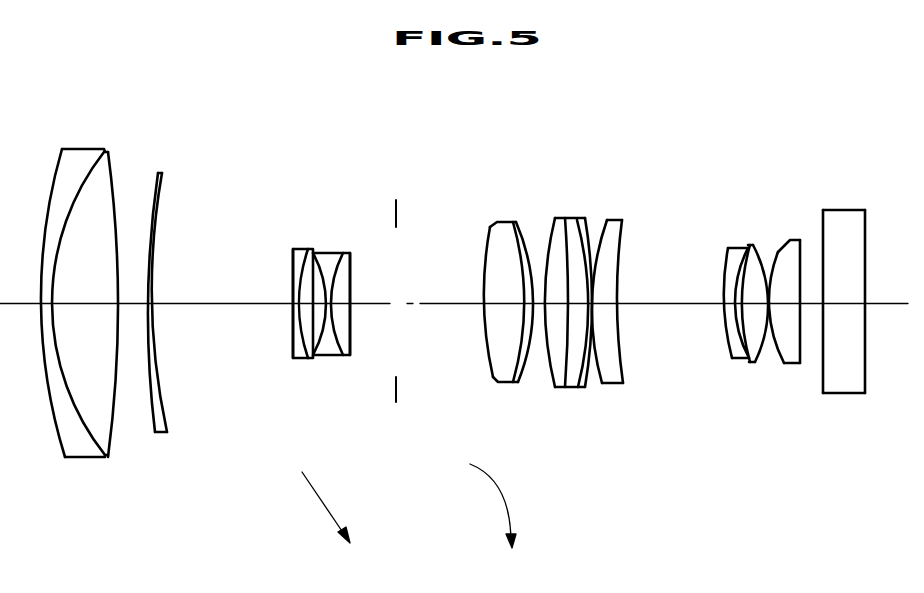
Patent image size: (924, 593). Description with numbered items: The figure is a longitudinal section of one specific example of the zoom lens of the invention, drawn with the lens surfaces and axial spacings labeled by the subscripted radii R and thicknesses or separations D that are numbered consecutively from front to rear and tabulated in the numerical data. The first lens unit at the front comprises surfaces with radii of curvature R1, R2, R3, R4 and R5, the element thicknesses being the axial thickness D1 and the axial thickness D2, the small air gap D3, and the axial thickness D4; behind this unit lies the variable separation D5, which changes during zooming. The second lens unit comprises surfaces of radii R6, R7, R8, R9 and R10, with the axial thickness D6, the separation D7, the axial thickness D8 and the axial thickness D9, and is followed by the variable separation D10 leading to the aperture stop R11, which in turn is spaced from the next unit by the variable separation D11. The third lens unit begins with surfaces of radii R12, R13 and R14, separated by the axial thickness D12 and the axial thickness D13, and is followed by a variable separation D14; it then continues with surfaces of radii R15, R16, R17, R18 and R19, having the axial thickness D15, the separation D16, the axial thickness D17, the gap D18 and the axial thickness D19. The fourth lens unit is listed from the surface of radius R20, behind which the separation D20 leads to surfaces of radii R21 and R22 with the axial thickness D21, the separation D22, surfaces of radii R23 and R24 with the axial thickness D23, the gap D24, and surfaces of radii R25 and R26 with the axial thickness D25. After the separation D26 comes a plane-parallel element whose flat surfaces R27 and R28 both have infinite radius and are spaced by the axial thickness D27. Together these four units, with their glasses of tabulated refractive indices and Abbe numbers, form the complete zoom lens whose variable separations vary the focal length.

The radius of curvature of first surface R1 is at (53, 182).
The radius of curvature of second surface R2 is at (86, 182).
The radius of curvature of third surface R3 is at (113, 183).
The radius of curvature of fourth surface R4 is at (135, 198).
The radius of curvature of fifth surface R5 is at (160, 192).
The radius of curvature of sixth surface R6 is at (292, 268).
The radius of curvature of seventh surface R7 is at (302, 268).
The radius of curvature of eighth surface R8 is at (318, 262).
The radius of curvature of ninth surface R9 is at (330, 263).
The radius of curvature of tenth surface R10 is at (352, 265).
The aperture stop R11 is at (397, 205).
The radius of curvature of twelfth surface R12 is at (486, 258).
The radius of curvature of thirteenth surface R13 is at (494, 235).
The radius of curvature of fourteenth surface R14 is at (519, 240).
The radius of curvature of fifteenth surface R15 is at (546, 255).
The radius of curvature of sixteenth surface R16 is at (566, 248).
The radius of curvature of seventeenth surface R17 is at (578, 245).
The radius of curvature of eighteenth surface R18 is at (596, 232).
The radius of curvature of nineteenth surface R19 is at (610, 230).
The radius of curvature of twentieth surface R20 is at (624, 240).
The radius of curvature of twenty-first surface R21 is at (726, 265).
The radius of curvature of twenty-second surface R22 is at (737, 262).
The radius of curvature of twenty-third surface R23 is at (752, 263).
The radius of curvature of twenty-fourth surface R24 is at (766, 258).
The radius of curvature of twenty-fifth surface R25 is at (782, 262).
The radius of curvature of twenty-sixth surface R26 is at (823, 230).
The radius of curvature of twenty-seventh surface R27 is at (826, 212).
The radius of curvature of twenty-eighth surface R28 is at (858, 228).
The first axial thickness D1 is at (45, 367).
The second axial thickness D2 is at (88, 310).
The third axial separation D3 is at (118, 330).
The fourth axial thickness D4 is at (137, 353).
The fifth axial separation D5 is at (217, 310).
The sixth axial thickness D6 is at (292, 328).
The seventh axial separation D7 is at (311, 330).
The eighth axial thickness D8 is at (325, 357).
The ninth axial thickness D9 is at (341, 357).
The tenth axial separation D10 is at (372, 310).
The eleventh axial separation D11 is at (430, 310).
The twelfth axial thickness D12 is at (490, 335).
The thirteenth axial thickness D13 is at (517, 327).
The fourteenth axial separation D14 is at (542, 337).
The fifteenth axial thickness D15 is at (552, 343).
The sixteenth axial separation D16 is at (572, 345).
The seventeenth axial thickness D17 is at (590, 333).
The eighteenth axial separation D18 is at (602, 350).
The nineteenth axial thickness D19 is at (622, 360).
The twentieth axial separation D20 is at (672, 310).
The twenty-first axial thickness D21 is at (728, 333).
The twenty-second axial separation D22 is at (745, 325).
The twenty-third axial thickness D23 is at (757, 352).
The twenty-fourth axial separation D24 is at (772, 330).
The twenty-fifth axial thickness D25 is at (793, 330).
The twenty-sixth axial separation D26 is at (815, 320).
The twenty-seventh axial thickness D27 is at (840, 310).